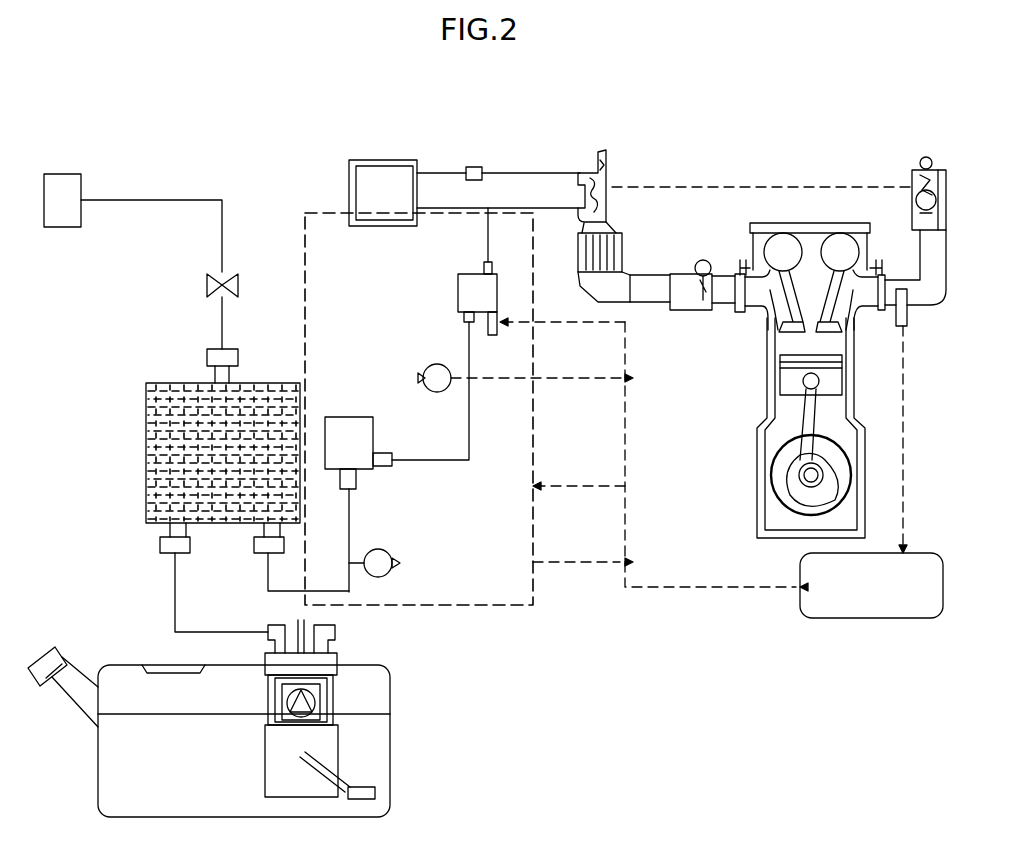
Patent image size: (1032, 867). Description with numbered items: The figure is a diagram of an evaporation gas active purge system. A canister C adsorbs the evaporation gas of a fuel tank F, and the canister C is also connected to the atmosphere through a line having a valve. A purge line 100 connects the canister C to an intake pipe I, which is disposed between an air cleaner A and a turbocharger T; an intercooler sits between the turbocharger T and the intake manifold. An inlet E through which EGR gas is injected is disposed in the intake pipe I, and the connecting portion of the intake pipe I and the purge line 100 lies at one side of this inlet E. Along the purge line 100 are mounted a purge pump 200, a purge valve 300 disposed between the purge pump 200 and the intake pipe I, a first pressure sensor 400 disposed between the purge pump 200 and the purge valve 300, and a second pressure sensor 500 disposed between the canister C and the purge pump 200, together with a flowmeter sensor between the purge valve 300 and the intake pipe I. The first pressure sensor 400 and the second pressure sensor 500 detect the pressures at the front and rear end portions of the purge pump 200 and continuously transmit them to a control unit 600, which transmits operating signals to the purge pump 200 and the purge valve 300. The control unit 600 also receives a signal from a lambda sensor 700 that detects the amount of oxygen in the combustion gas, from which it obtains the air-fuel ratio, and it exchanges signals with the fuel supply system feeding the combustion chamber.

The purge line 100 is at (349, 524).
The purge pump 200 is at (346, 418).
The purge valve 300 is at (463, 288).
The first pressure sensor 400 is at (440, 384).
The second pressure sensor 500 is at (380, 575).
The control unit 600 is at (871, 620).
The lambda sensor 700 is at (908, 312).
The air cleaner A is at (384, 185).
The inlet E is at (475, 166).
The intake pipe I is at (518, 188).
The turbocharger T is at (604, 180).
The canister C is at (153, 455).
The fuel tank F is at (395, 755).